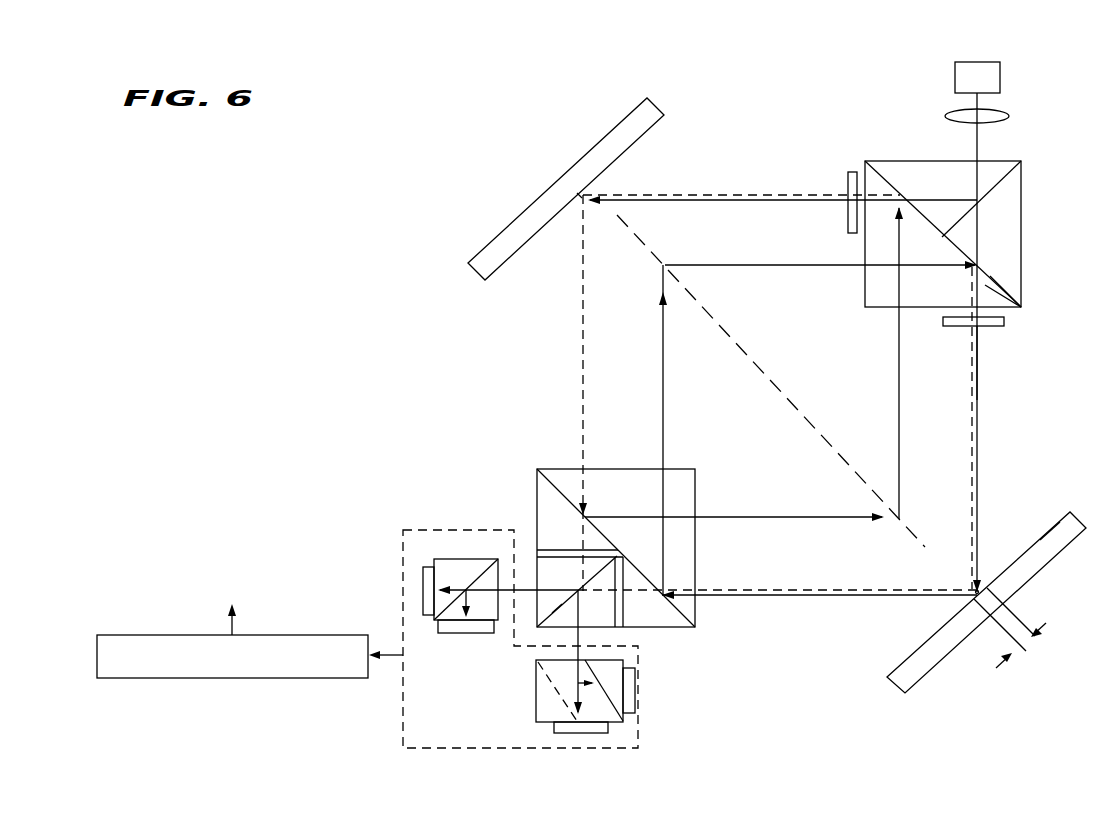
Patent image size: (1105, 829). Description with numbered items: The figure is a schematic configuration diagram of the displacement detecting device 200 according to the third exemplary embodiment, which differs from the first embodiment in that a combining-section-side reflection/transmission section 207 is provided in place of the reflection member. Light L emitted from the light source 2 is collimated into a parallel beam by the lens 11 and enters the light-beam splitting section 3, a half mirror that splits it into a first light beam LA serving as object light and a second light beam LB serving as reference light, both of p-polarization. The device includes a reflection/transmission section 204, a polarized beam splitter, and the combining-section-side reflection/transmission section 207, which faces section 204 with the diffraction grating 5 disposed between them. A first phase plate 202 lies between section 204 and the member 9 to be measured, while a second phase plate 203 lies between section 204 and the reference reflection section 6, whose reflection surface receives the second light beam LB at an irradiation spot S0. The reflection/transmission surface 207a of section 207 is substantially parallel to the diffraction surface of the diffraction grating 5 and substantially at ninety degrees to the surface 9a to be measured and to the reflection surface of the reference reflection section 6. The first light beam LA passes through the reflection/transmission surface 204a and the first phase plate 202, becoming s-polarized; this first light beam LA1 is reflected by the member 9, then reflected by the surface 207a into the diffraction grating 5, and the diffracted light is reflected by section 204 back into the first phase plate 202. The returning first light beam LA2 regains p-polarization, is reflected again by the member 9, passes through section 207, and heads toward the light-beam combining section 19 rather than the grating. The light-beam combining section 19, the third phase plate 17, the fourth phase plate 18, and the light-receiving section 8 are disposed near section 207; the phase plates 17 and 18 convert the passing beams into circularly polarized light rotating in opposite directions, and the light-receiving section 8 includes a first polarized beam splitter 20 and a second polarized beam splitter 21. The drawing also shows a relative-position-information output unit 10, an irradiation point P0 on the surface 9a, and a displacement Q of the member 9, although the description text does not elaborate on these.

The displacement detecting device 200 is at (625, 62).
The light source 2 is at (978, 62).
The lens 11 is at (1010, 116).
The light-beam splitting section 3 is at (1007, 175).
The second phase plate 203 is at (853, 172).
The first phase plate 202 is at (995, 328).
The reflection/transmission section 204 is at (1021, 303).
The reflection/transmission surface 204a is at (1007, 288).
The reference reflection section 6 is at (543, 193).
The member to be measured 9 is at (1062, 550).
The surface to be measured 9a is at (1048, 528).
The diffraction grating 5 is at (925, 533).
The combining-section-side reflection/transmission section 207 is at (693, 577).
The reflection/transmission surface 207a is at (682, 613).
The third phase plate 17 is at (623, 618).
The fourth phase plate 18 is at (547, 547).
The light-receiving section 8 is at (638, 748).
The light-beam combining section 19 is at (555, 615).
The first polarized beam splitter 20 is at (547, 724).
The second polarized beam splitter 21 is at (423, 582).
The relative-position-information output unit 10 is at (167, 678).
The light L is at (980, 157).
The first light beam LA is at (980, 227).
The second light beam LB is at (940, 196).
The first light beam LA1 is at (978, 402).
The first light beam LA2 is at (974, 421).
The irradiation spot S0 is at (577, 195).
The irradiation point P0 is at (982, 592).
The displacement Q is at (1010, 630).